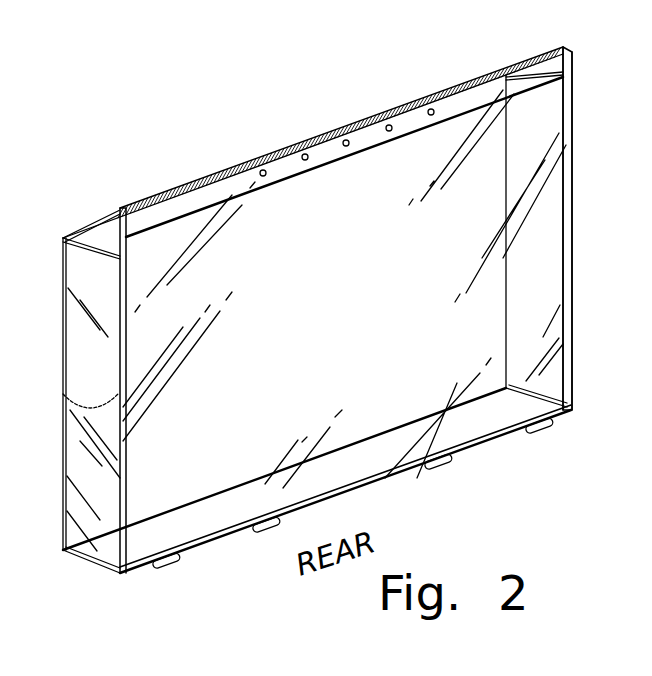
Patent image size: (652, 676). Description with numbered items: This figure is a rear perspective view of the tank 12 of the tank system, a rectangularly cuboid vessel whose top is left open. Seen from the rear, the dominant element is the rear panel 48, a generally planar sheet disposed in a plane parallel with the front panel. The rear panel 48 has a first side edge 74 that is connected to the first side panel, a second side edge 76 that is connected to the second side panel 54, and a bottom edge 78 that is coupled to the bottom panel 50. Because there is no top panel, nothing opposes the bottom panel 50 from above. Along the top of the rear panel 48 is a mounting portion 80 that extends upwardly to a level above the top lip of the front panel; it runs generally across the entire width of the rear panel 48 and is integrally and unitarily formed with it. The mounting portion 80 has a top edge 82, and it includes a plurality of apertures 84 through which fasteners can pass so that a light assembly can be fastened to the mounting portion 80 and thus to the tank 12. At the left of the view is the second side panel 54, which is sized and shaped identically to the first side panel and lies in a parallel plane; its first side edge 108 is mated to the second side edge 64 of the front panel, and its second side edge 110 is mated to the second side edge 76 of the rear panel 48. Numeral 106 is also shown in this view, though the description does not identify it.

The tank 12 is at (233, 99).
The top edge 82 is at (533, 56).
The apertures 84 is at (428, 106).
The mounting portion 80 is at (574, 67).
The first side edge 74 is at (570, 298).
The second side panel 54 is at (80, 273).
The rear panel 48 is at (172, 462).
The bottom panel 50 is at (170, 532).
The bottom edge 78 is at (343, 485).
The second side edge 76 is at (64, 400).
The second side edge 110 is at (0, 360).
The first side edge 108 is at (0, 494).
The bracket 106 is at (0, 561).
The second side edge 64 is at (0, 583).